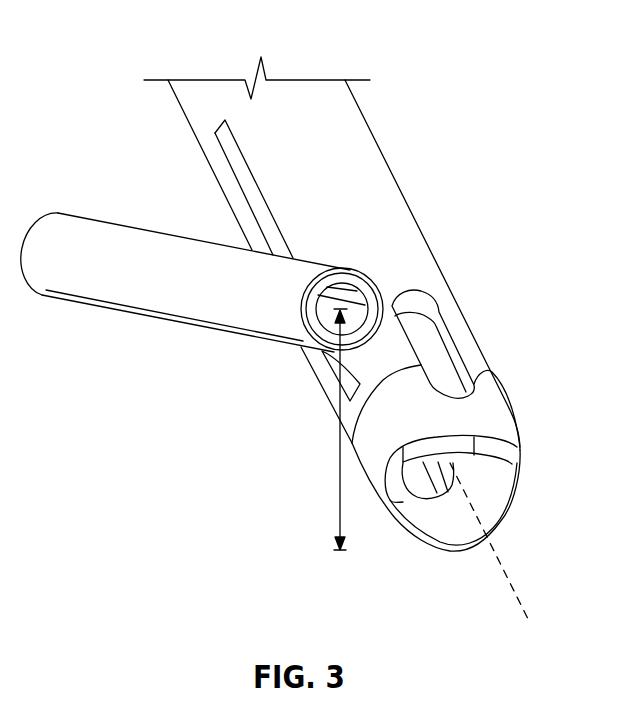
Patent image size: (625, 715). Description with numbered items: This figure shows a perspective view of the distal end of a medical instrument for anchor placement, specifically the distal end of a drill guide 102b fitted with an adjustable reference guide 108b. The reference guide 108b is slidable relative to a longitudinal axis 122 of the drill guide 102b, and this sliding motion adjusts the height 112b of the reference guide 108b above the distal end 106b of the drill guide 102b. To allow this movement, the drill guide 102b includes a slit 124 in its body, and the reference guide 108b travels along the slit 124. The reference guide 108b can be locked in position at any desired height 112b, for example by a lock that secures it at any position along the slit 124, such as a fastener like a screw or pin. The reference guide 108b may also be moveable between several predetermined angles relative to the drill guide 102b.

The drill guide 102b is at (317, 97).
The slit 124 is at (223, 153).
The adjustable reference guide 108b is at (118, 292).
The height 112b is at (340, 482).
The distal end 106b is at (490, 535).
The longitudinal axis 122 is at (510, 583).